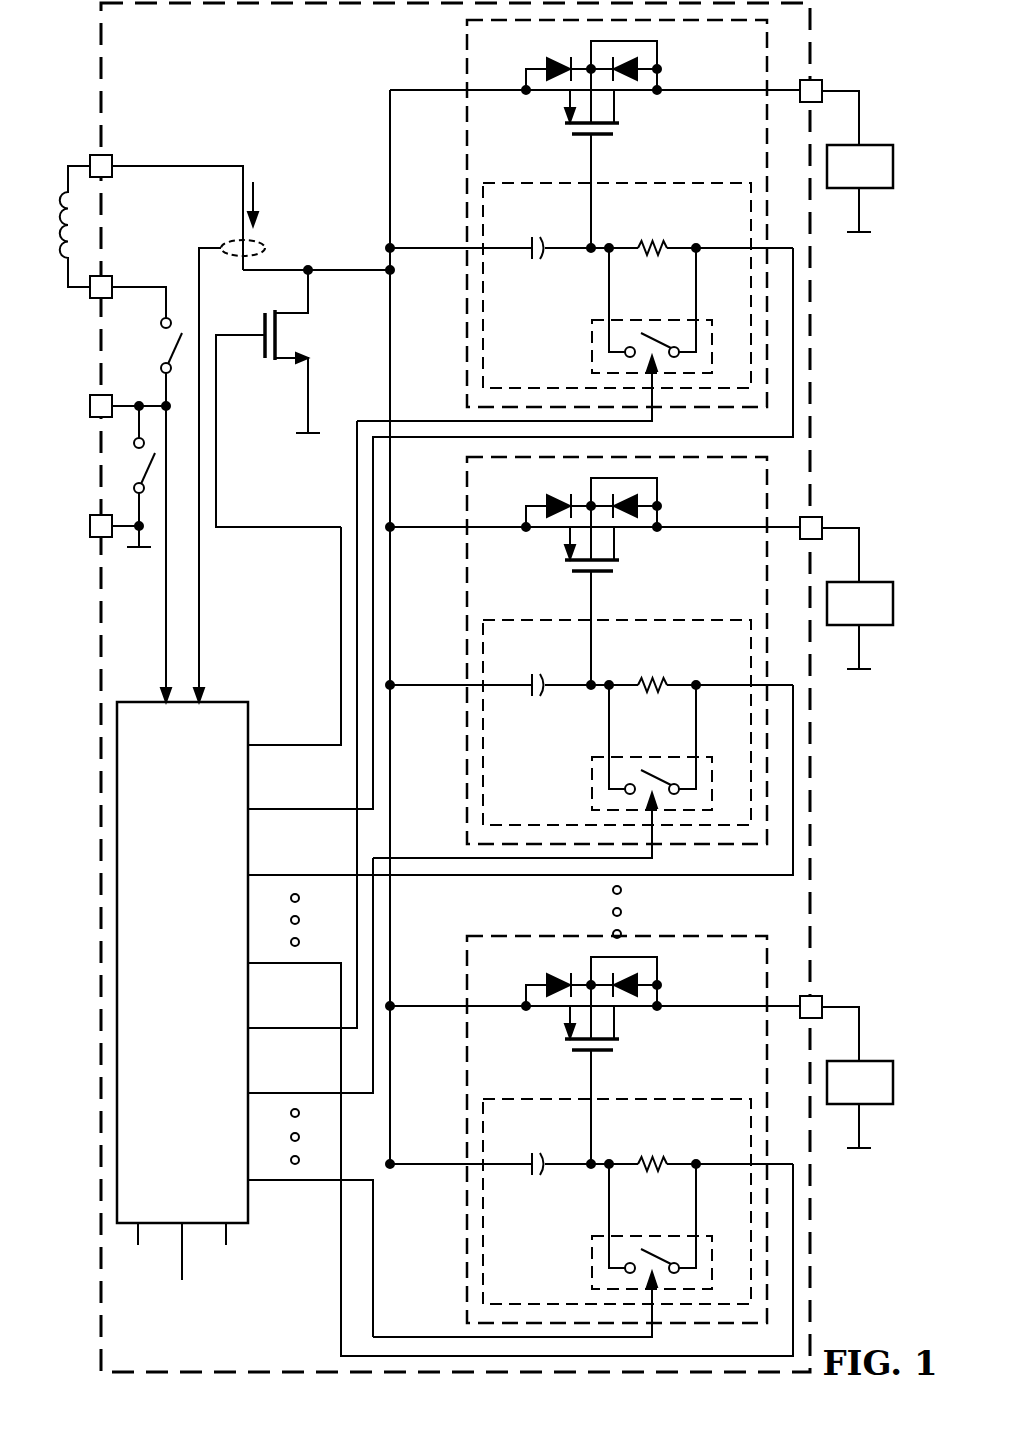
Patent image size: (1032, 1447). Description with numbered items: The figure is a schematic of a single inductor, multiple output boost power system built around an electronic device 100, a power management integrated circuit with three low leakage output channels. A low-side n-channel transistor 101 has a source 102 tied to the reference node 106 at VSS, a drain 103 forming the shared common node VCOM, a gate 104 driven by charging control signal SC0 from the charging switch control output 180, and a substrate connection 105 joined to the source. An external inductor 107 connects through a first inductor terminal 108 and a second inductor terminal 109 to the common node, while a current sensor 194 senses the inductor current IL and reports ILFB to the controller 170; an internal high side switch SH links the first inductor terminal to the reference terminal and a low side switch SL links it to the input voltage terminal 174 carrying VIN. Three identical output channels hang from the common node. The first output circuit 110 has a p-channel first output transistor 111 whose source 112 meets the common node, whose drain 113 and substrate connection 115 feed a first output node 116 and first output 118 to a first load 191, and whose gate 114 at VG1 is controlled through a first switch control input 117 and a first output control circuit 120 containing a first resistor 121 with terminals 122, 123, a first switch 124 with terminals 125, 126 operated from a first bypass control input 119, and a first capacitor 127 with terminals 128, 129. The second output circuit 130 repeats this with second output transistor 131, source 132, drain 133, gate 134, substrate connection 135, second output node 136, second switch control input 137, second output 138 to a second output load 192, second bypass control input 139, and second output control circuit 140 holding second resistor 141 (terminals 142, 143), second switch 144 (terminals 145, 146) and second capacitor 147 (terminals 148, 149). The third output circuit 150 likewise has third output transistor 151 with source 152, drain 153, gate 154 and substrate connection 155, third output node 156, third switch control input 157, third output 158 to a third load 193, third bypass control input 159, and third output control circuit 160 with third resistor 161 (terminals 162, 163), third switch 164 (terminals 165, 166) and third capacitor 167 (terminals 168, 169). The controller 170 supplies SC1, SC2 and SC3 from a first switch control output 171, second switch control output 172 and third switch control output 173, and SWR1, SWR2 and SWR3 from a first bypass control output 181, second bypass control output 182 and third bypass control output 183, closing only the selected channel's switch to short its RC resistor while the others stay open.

The electronic device 100 is at (94, 74).
The transistor 101 is at (288, 398).
The source 102 is at (308, 366).
The drain 103 is at (310, 314).
The gate 104 is at (260, 346).
The substrate connection 105 is at (288, 336).
The reference node 106 is at (88, 520).
The inductor 107 is at (62, 192).
The first inductor terminal 108 is at (88, 293).
The second inductor terminal 109 is at (114, 162).
The first output circuit 110 is at (460, 58).
The first output transistor 111 is at (570, 134).
The source 112 is at (523, 87).
The drain 113 is at (665, 97).
The gate 114 is at (593, 142).
The substrate connection 115 is at (591, 54).
The first output node 116 is at (690, 88).
The first switch control input 117 is at (709, 256).
The first output 118 is at (825, 87).
The first bypass control input 119 is at (657, 417).
The first output control circuit 120 is at (708, 180).
The first resistor 121 is at (655, 239).
The first terminal 122 is at (677, 244).
The second terminal 123 is at (609, 241).
The first switch 124 is at (590, 344).
The first terminal 125 is at (692, 254).
The second terminal 126 is at (611, 288).
The first capacitor 127 is at (533, 240).
The first terminal 128 is at (550, 257).
The second terminal 129 is at (525, 257).
The second output circuit 130 is at (654, 665).
The second output transistor 131 is at (556, 530).
The source 132 is at (510, 505).
The drain 133 is at (680, 546).
The gate 134 is at (623, 630).
The substrate connection 135 is at (592, 490).
The second output node 136 is at (728, 502).
The second switch control input 137 is at (744, 715).
The second output 138 is at (851, 513).
The second bypass control input 139 is at (552, 833).
The second output control circuit 140 is at (589, 691).
The second resistor 141 is at (664, 657).
The first terminal 142 is at (703, 659).
The second terminal 143 is at (615, 659).
The second switch 144 is at (614, 747).
The first terminal 145 is at (659, 737).
The second terminal 146 is at (648, 737).
The second capacitor 147 is at (519, 660).
The first terminal 148 is at (566, 715).
The second terminal 149 is at (510, 715).
The third output circuit 150 is at (654, 1144).
The third output transistor 151 is at (556, 1009).
The source 152 is at (510, 984).
The drain 153 is at (680, 1025).
The gate 154 is at (623, 1109).
The substrate connection 155 is at (592, 969).
The third output node 156 is at (728, 981).
The third switch control input 157 is at (744, 1194).
The third output 158 is at (851, 992).
The third bypass control input 159 is at (552, 1312).
The third output control circuit 160 is at (589, 1170).
The third resistor 161 is at (664, 1136).
The first terminal 162 is at (703, 1138).
The second terminal 163 is at (615, 1138).
The third switch 164 is at (614, 1226).
The first terminal 165 is at (659, 1216).
The second terminal 166 is at (648, 1216).
The third capacitor 167 is at (519, 1139).
The first terminal 168 is at (566, 1194).
The second terminal 169 is at (510, 1194).
The controller 170 is at (165, 1009).
The first switch control output 171 is at (275, 807).
The second switch control output 172 is at (280, 873).
The third switch control output 173 is at (304, 961).
The input voltage terminal 174 is at (88, 400).
The charging switch control output 180 is at (275, 743).
The first bypass control output 181 is at (284, 1026).
The second bypass control output 182 is at (284, 1091).
The third bypass control output 183 is at (287, 1183).
The first load 191 is at (870, 145).
The second output load 192 is at (866, 597).
The third load 193 is at (866, 1076).
The current sensor 194 is at (234, 242).